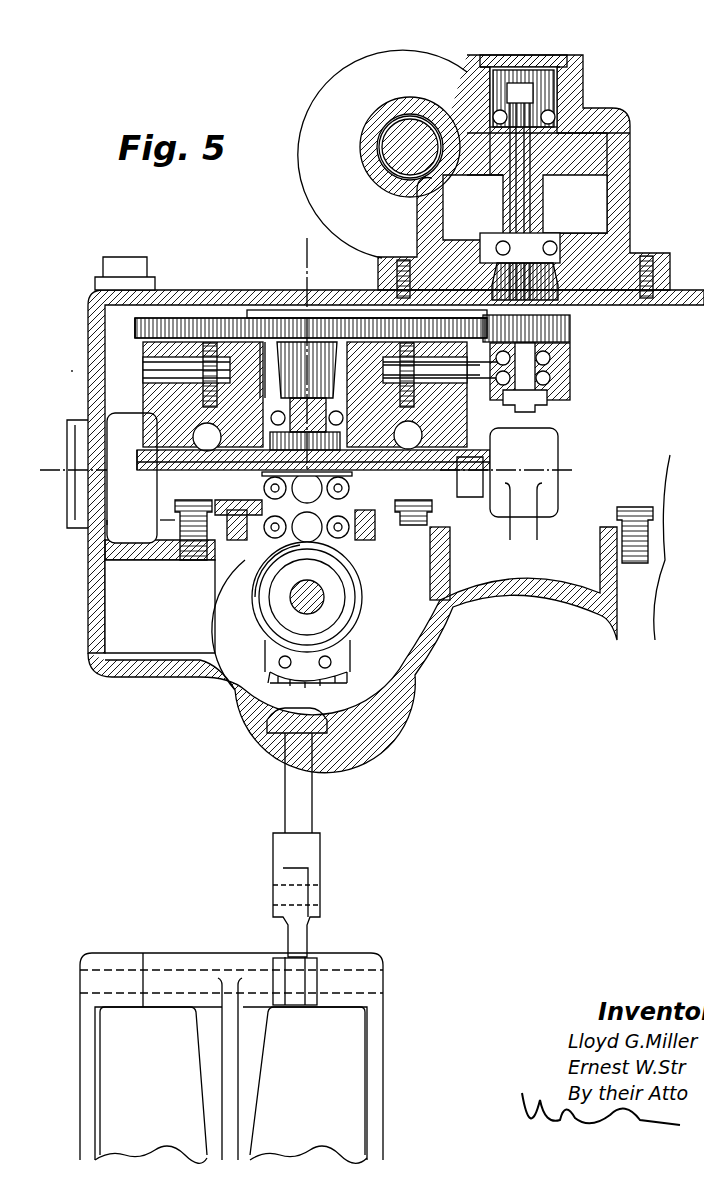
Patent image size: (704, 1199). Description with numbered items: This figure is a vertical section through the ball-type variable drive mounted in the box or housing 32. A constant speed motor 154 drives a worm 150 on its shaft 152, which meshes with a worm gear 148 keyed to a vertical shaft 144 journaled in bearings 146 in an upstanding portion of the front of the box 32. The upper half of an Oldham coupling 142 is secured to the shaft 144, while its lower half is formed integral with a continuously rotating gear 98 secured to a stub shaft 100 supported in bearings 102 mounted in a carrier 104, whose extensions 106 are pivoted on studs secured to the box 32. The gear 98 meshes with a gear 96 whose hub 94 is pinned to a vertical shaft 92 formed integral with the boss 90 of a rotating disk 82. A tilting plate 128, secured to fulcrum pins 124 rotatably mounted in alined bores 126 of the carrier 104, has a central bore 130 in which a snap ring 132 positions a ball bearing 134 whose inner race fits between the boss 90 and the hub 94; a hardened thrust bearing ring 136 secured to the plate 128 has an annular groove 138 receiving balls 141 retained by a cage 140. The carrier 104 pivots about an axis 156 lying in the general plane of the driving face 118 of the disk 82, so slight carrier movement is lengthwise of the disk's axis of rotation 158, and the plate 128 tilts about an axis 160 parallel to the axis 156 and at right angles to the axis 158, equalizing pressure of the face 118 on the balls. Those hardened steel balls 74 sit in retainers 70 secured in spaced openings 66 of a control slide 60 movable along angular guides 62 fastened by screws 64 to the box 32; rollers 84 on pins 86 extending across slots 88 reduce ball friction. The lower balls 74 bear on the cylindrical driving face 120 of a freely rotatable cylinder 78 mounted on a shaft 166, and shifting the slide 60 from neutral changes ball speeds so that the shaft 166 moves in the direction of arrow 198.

The box or housing 32 is at (195, 290).
The control or regulating slide 60 is at (672, 490).
The angular guides 62 is at (235, 540).
The screws 64 is at (178, 520).
The spaced openings 66 is at (215, 505).
The retainers 70 is at (245, 560).
The hardened steel balls 74 is at (265, 522).
The cylinder 78 is at (345, 597).
The disk 82 is at (483, 460).
The ball engaging rollers 84 is at (262, 485).
The pins 86 is at (400, 485).
The slots 88 is at (400, 470).
The boss 90 is at (338, 380).
The vertical shaft 92 is at (340, 318).
The hub 94 is at (318, 318).
The gear 96 is at (140, 335).
The continuously rotating gear 98 is at (572, 327).
The stub shaft 100 is at (540, 400).
The bearings 102 is at (570, 368).
The carrier 104 is at (150, 395).
The extensions 106 is at (205, 430).
The work engaging face 118 is at (125, 460).
The cylindrical driving face 120 is at (258, 620).
The fulcrum pins 124 is at (150, 370).
The alined bores 126 is at (470, 357).
The tilting plate 128 is at (277, 375).
The bore 130 is at (384, 378).
The snap ring 132 is at (383, 368).
The ball bearing 134 is at (280, 368).
The thrust bearing ring 136 is at (195, 428).
The annular groove 138 is at (215, 500).
The cage 140 is at (205, 455).
The balls 141 is at (455, 440).
The Oldham coupling 142 is at (556, 294).
The vertical shaft 144 is at (530, 205).
The bearings 146 is at (545, 248).
The worm gear 148 is at (580, 135).
The bore 150 is at (428, 125).
The motor shaft 152 is at (400, 135).
The constant speed motor 154 is at (413, 45).
The axis 156 is at (45, 470).
The axis of rotation 158 is at (307, 258).
The axis 160 is at (72, 370).
The shaft 166 is at (295, 605).
The arrow 198 is at (320, 605).